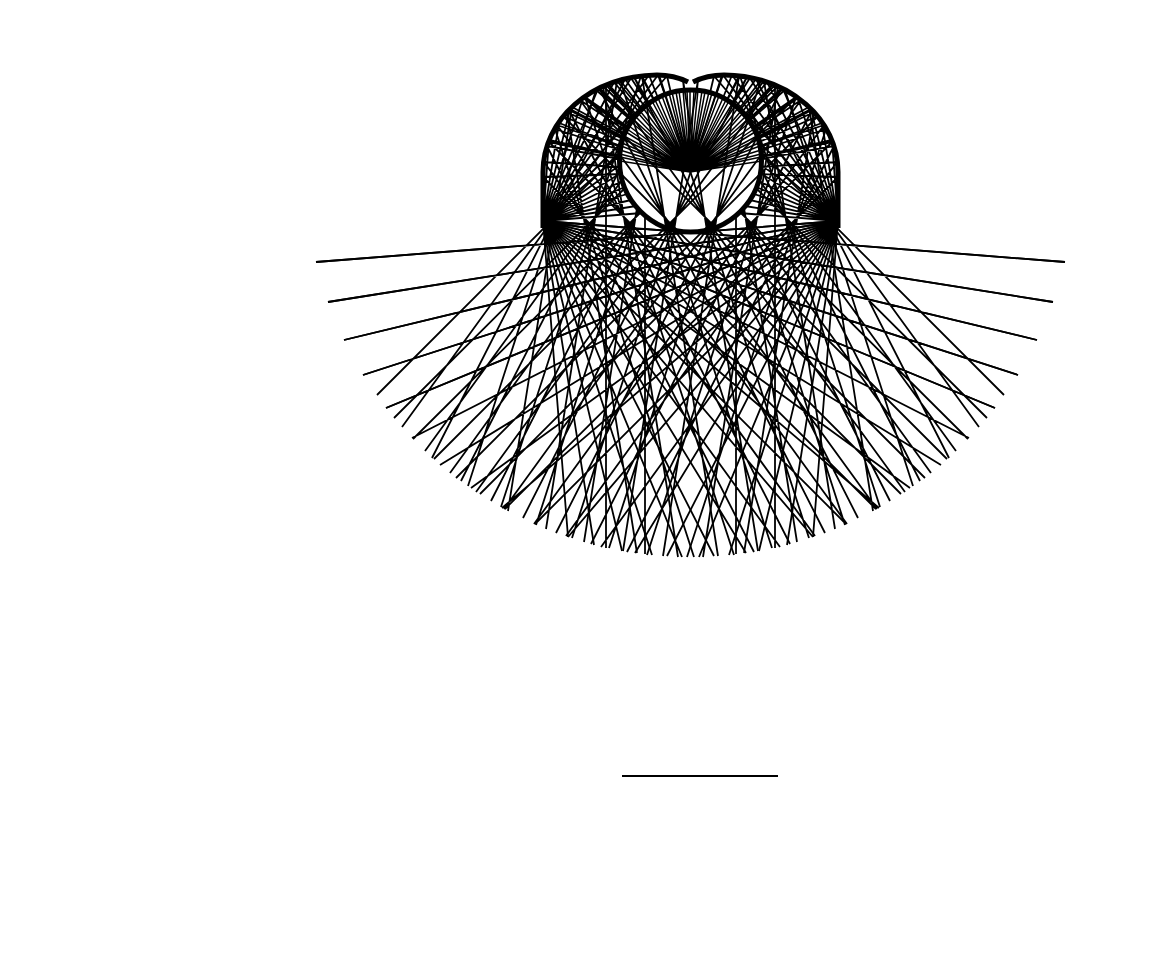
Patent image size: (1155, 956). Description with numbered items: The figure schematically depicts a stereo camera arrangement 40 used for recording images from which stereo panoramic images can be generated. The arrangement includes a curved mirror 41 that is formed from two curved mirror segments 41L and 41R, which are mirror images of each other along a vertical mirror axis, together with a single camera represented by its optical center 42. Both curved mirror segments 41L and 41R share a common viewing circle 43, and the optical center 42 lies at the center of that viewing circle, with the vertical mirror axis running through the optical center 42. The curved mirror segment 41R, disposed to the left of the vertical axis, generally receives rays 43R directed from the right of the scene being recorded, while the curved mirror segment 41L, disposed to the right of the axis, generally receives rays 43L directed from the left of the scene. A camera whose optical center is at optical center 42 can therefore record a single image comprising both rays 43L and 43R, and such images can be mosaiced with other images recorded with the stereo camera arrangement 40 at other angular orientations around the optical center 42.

The stereo camera arrangement 40 is at (248, 179).
The curved mirror 41 is at (648, 57).
The curved mirror segment 41R is at (550, 162).
The curved mirror segment 41L is at (834, 158).
The optical center 42 is at (692, 174).
The viewing circle 43 is at (975, 237).
The rays 43L is at (387, 405).
The rays 43R is at (994, 405).